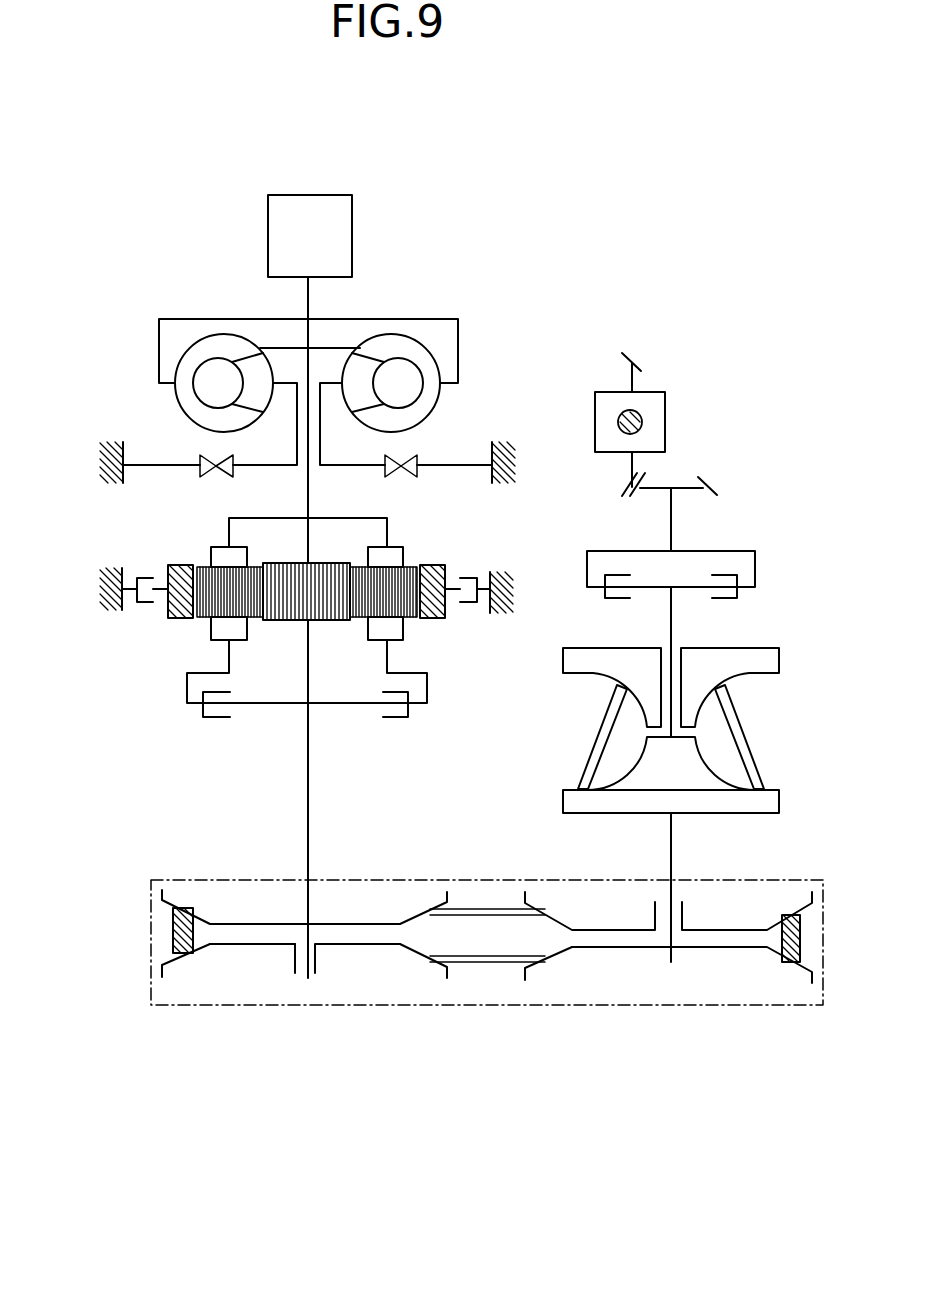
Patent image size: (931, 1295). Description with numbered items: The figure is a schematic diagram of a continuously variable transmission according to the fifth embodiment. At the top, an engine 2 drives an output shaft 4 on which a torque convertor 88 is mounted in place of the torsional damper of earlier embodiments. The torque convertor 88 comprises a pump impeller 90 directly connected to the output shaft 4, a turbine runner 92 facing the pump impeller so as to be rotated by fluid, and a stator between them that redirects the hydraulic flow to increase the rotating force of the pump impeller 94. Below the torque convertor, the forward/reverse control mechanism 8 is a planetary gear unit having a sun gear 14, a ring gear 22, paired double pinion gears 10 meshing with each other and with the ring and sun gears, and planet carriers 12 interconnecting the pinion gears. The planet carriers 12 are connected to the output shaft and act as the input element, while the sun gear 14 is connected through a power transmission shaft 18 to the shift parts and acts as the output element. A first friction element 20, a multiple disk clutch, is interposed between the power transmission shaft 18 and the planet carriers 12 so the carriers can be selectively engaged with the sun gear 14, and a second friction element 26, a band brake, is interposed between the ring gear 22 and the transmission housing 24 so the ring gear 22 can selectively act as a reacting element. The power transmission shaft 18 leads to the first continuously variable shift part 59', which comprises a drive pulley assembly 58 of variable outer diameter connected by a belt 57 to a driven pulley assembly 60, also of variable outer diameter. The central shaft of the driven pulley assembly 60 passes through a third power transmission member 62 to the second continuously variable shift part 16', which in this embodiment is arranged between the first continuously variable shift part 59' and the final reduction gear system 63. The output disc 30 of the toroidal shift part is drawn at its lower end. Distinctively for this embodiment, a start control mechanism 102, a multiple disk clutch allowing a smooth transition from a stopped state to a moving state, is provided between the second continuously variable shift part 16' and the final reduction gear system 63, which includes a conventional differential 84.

The engine 2 is at (309, 195).
The output shaft 4 is at (309, 298).
The torque convertor 88 is at (335, 381).
The pump impeller 90 is at (430, 410).
The turbine runner 92 is at (417, 356).
The pump impeller (stator) 94 is at (350, 367).
The forward/reverse control mechanism 8 is at (281, 747).
The pinion gears 10 is at (207, 605).
The planet carriers 12 is at (245, 636).
The sun gear 14 is at (305, 566).
The power transmission shaft 18 is at (308, 745).
The first friction element 20 is at (203, 712).
The ring gear 22 is at (185, 563).
The transmission housing 24 is at (100, 588).
The second friction element 26 is at (141, 574).
The final reduction gear system 63 is at (731, 644).
The differential 84 is at (665, 421).
The start control mechanism 102 is at (770, 541).
The third power transmission member 62 is at (671, 857).
The second continuously variable shift part 16' is at (653, 735).
The output disc 30 is at (771, 802).
The first continuously variable shift part 59' is at (450, 991).
The belt 57 is at (173, 927).
The drive pulley assembly 58 is at (251, 952).
The driven pulley assembly 60 is at (724, 956).